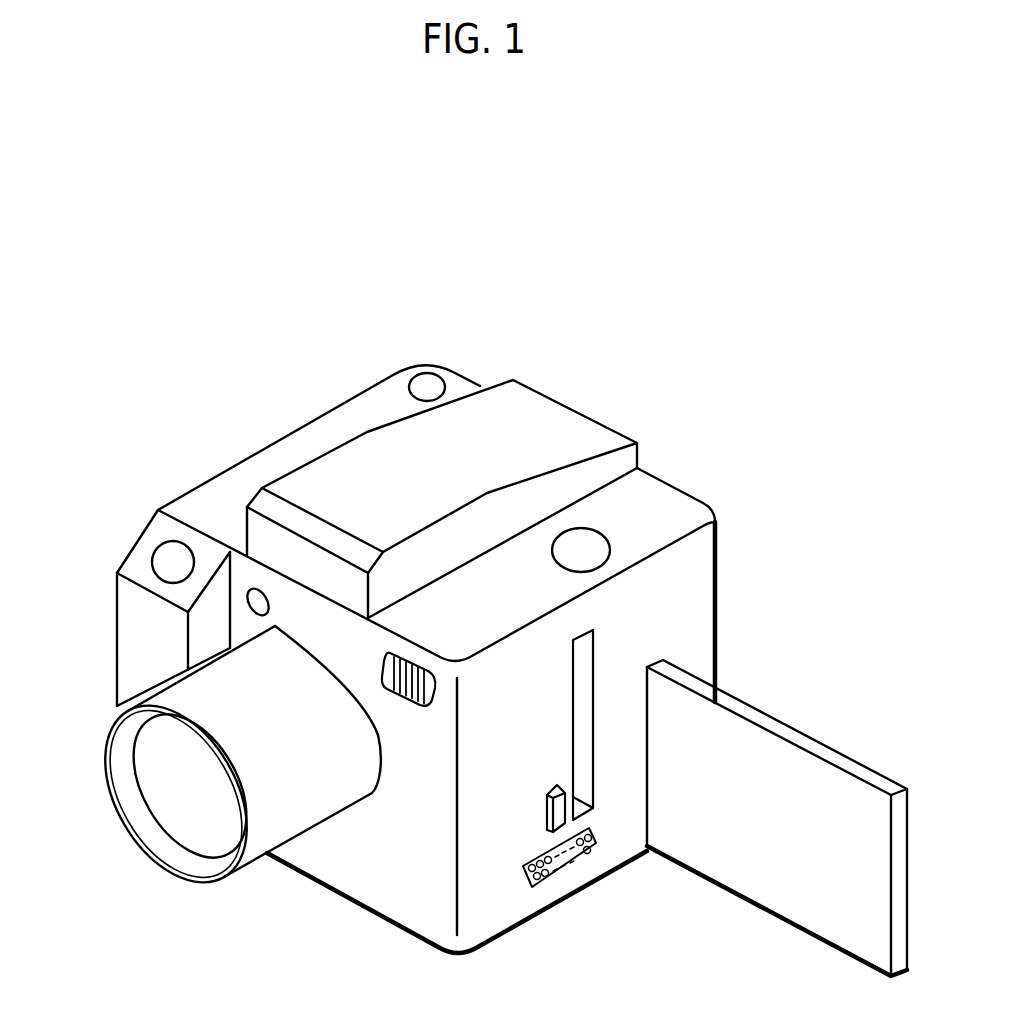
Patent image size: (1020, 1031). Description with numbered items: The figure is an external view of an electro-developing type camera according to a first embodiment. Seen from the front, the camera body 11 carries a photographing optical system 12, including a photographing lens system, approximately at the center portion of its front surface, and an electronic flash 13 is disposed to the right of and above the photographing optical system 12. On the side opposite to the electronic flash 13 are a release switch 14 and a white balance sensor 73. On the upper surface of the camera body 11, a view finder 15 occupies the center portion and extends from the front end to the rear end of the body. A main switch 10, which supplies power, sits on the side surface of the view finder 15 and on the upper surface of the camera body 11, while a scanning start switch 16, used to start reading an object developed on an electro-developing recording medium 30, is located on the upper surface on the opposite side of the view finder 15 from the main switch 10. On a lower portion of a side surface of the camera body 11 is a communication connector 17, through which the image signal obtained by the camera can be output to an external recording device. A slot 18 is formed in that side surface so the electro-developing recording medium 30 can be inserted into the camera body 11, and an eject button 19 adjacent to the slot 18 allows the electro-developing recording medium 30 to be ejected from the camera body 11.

The main switch 10 is at (427, 386).
The camera body 11 is at (368, 917).
The photographing optical system 12 is at (196, 825).
The electronic flash 13 is at (415, 706).
The release switch 14 is at (171, 560).
The view finder 15 is at (336, 476).
The scanning start switch 16 is at (582, 550).
The communication connector 17 is at (548, 887).
The slot 18 is at (585, 773).
The eject button 19 is at (547, 813).
The electro-developing recording medium 30 is at (773, 888).
The white balance sensor 73 is at (258, 602).